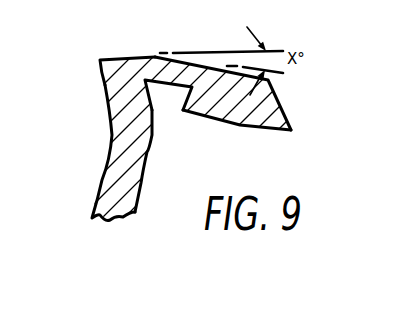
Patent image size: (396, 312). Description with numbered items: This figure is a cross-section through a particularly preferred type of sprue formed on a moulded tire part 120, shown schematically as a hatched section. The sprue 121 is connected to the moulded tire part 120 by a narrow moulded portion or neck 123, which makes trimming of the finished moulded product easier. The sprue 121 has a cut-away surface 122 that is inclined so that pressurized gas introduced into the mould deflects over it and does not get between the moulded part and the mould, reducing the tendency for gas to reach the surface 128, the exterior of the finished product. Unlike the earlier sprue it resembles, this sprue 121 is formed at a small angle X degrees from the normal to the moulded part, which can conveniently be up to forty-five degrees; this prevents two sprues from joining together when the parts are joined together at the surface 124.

The moulded tire part 120 is at (103, 150).
The sprue 121 is at (277, 85).
The cut-away surface 122 is at (289, 122).
The narrow moulded portion or neck 123 is at (178, 75).
The surface 124 is at (117, 58).
The surface 128 is at (142, 189).